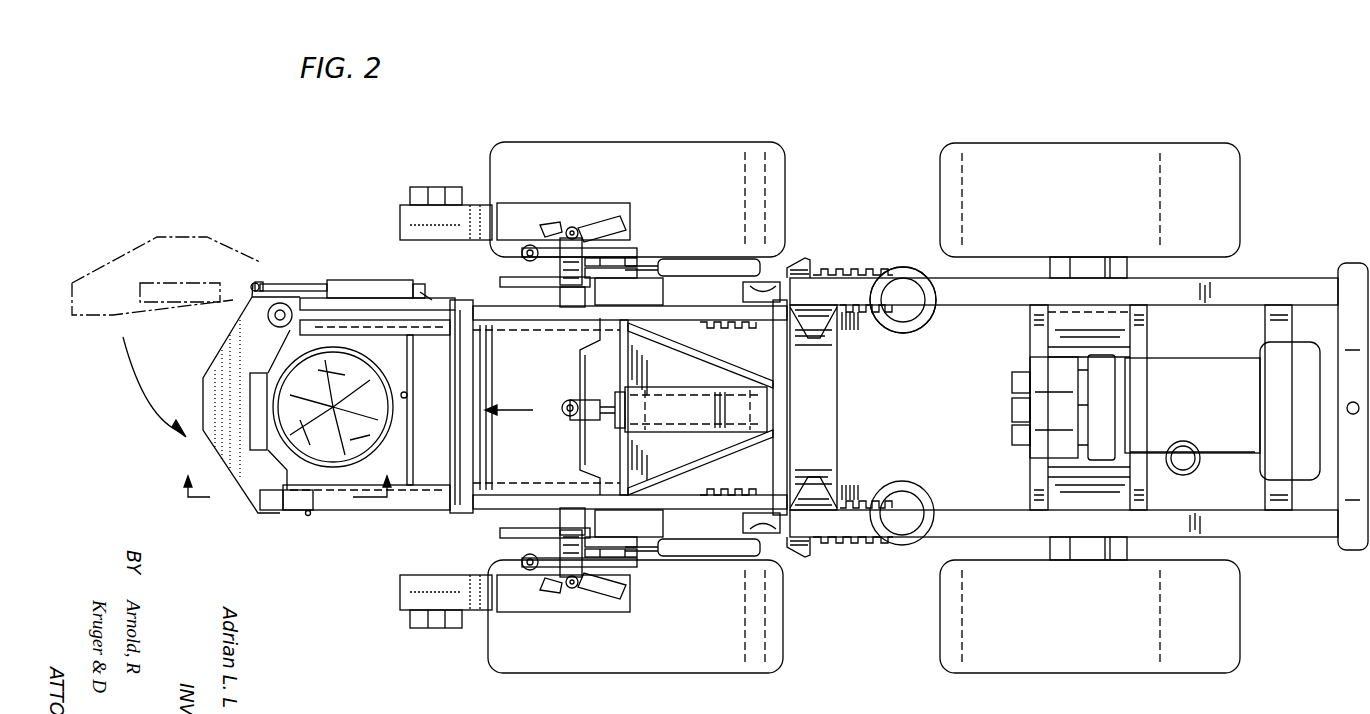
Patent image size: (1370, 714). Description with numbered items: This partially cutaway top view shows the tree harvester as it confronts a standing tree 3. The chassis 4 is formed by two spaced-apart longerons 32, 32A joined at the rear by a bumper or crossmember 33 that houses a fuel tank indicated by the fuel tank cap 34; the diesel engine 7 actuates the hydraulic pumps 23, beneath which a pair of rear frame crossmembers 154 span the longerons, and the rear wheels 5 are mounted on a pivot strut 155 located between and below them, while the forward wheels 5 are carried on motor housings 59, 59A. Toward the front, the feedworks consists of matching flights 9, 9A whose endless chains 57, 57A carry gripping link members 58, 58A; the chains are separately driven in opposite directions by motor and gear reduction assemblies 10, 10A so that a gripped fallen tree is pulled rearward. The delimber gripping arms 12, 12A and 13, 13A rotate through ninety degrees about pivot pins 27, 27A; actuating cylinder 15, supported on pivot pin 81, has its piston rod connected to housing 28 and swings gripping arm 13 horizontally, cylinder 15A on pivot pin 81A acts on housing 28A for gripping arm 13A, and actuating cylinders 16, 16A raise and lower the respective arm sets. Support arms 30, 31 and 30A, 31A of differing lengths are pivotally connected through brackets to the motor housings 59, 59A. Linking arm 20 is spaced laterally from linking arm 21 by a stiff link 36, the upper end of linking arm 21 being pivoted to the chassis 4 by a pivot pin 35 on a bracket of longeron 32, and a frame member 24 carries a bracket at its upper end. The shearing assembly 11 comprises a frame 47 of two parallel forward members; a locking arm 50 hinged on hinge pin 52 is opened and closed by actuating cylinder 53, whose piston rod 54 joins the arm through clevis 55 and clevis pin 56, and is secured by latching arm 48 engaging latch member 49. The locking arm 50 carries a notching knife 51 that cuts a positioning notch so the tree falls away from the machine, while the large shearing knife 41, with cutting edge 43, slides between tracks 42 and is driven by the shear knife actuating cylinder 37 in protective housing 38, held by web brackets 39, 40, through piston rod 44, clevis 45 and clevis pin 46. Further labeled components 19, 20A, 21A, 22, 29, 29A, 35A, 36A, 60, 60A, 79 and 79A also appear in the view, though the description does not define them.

The standing tree 3 is at (370, 365).
The chassis 4 is at (997, 560).
The wheels 5 is at (740, 143).
The diesel engine 7 is at (1215, 360).
The flight 9 is at (873, 546).
The flight 9A is at (861, 322).
The hydraulic motor and gear reduction assembly 10 is at (915, 490).
The motor and gear reduction assembly 10A is at (925, 318).
The shearing assembly 11 is at (410, 512).
The gripping arm 12 is at (420, 652).
The gripping arm 12A is at (437, 187).
The gripping arm 13 is at (400, 595).
The gripping arm 13A is at (400, 222).
The actuating cylinder 15 is at (596, 598).
The actuating cylinder 15A is at (612, 218).
The actuating cylinder 16 is at (703, 558).
The actuating cylinder 16A is at (738, 259).
The block 19 is at (468, 527).
The linking arm 20 is at (497, 532).
The plate 20A is at (500, 281).
The linking arm 21 is at (690, 497).
The rail 21A is at (692, 318).
The cross member 22 is at (474, 438).
The hydraulic pumps 23 is at (1032, 402).
The frame member 24 is at (838, 408).
The pivot pin 27 is at (527, 572).
The pivot pin 27A is at (527, 245).
The housing 28 is at (608, 614).
The housing 28A is at (510, 203).
The arm 29 is at (630, 568).
The arm 29A is at (622, 252).
The support arm 30 is at (622, 530).
The support arm 30A is at (624, 286).
The support arm 31 is at (600, 548).
The support arm 31A is at (608, 240).
The longeron 32 is at (1268, 537).
The longeron 32A is at (1270, 278).
The bumper or crossmember 33 is at (1355, 550).
The fuel tank cap 34 is at (1352, 414).
The pivot pin 35 is at (782, 522).
The gusset 35A is at (785, 294).
The stiff link 36 is at (566, 494).
The bracket 36A is at (562, 322).
The shear knife actuating cylinder 37 is at (737, 395).
The protective housing 38 is at (727, 433).
The web bracket 39 is at (677, 362).
The web bracket 40 is at (662, 440).
The shearing knife 41 is at (580, 372).
The tracks 42 is at (503, 337).
The cutting edge 43 is at (411, 396).
The piston rod 44 is at (610, 425).
The clevis 45 is at (580, 414).
The clevis pin 46 is at (563, 402).
The shear knife assembly frame 47 is at (372, 512).
The latching arm 48 is at (290, 512).
The latch member 49 is at (308, 516).
The locking arm 50 is at (240, 494).
The notching knife 51 is at (249, 396).
The hinge pin 52 is at (273, 327).
The actuating cylinder 53 is at (350, 280).
The piston rod 54 is at (300, 283).
The clevis 55 is at (260, 281).
The clevis pin 56 is at (252, 284).
The endless chain 57 is at (860, 500).
The endless chain 57A is at (852, 268).
The gripping link members 58 is at (860, 548).
The gripping link members 58A is at (890, 270).
The motor housing 59 is at (700, 520).
The motor housing 59A is at (682, 305).
The axle housing 60 is at (1045, 556).
The axle housing 60A is at (1048, 262).
The pennant plate 79 is at (800, 560).
The pennant plate 79A is at (800, 262).
The pivot pin 81 is at (570, 590).
The pivot pin 81A is at (571, 227).
The rear frame crossmembers 154 is at (1030, 322).
The pivot strut 155 is at (1147, 327).